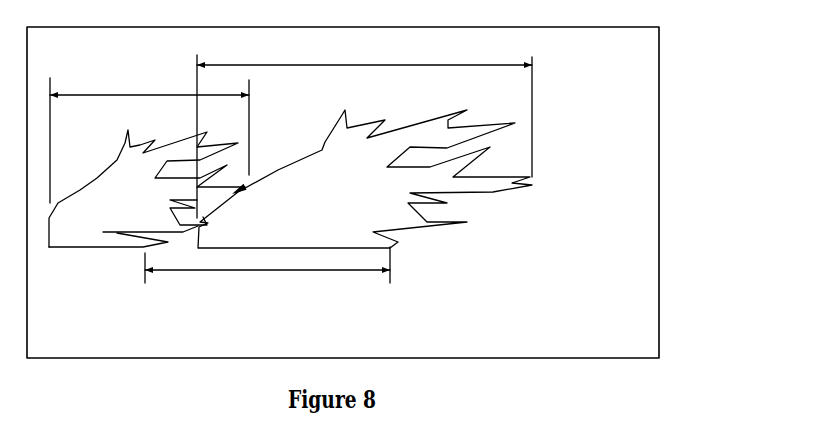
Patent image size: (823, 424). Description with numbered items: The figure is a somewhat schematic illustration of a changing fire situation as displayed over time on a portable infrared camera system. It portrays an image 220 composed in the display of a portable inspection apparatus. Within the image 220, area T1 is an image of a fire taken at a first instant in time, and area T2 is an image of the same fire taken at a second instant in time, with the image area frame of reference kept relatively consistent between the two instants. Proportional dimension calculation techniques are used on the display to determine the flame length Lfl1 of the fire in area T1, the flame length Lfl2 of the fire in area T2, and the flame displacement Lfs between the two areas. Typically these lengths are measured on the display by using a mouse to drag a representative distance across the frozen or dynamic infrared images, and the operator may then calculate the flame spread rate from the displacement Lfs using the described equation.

The image 220 is at (709, 94).
The area T1 is at (103, 208).
The area T2 is at (318, 210).
The flame length Lfl1 is at (149, 134).
The flame length Lfl2 is at (364, 136).
The flame displacement Lfs is at (267, 280).